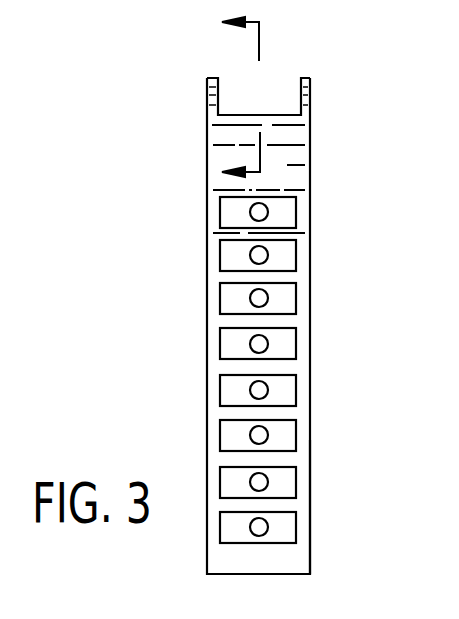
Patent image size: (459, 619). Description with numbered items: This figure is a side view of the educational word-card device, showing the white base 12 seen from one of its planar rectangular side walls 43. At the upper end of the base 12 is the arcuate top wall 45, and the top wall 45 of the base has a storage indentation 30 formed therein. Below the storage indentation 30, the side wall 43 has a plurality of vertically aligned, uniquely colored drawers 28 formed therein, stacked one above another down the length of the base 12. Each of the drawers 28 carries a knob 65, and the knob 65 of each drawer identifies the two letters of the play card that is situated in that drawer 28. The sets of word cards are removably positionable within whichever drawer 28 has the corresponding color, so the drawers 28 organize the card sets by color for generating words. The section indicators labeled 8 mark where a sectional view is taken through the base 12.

The base 12 is at (311, 170).
The storage indentation 30 is at (260, 115).
The top wall 45 is at (302, 124).
The section line 8- 8 is at (252, 97).
The drawers 28 is at (287, 252).
The knob 65 is at (273, 345).
The side walls 43 is at (302, 483).